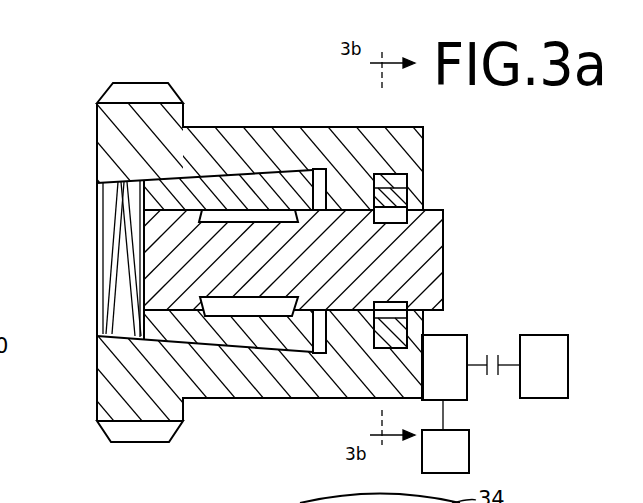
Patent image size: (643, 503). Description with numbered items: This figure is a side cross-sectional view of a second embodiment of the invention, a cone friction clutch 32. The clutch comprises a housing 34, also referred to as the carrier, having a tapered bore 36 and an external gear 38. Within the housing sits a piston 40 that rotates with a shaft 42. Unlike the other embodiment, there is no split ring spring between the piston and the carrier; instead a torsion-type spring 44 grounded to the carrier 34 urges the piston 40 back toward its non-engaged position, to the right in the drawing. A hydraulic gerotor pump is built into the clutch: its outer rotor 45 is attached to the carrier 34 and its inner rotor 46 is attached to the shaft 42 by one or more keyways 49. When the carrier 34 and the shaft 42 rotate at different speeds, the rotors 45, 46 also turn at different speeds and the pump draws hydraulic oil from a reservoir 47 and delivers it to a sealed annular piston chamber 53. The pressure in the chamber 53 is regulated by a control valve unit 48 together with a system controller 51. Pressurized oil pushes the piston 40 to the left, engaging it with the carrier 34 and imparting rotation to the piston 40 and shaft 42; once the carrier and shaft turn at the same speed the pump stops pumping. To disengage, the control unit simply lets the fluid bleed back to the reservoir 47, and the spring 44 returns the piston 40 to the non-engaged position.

The cone friction clutch 32 is at (482, 242).
The housing 34 is at (289, 142).
The tapered bore 36 is at (99, 289).
The external gear 38 is at (177, 95).
The piston 40 is at (187, 323).
The shaft 42 is at (167, 280).
The torsion-type spring 44 is at (120, 205).
The outer rotor 45 is at (399, 177).
The inner rotor 46 is at (387, 196).
The reservoir 47 is at (469, 447).
The control valve unit 48 is at (447, 372).
The keyways 49 is at (380, 218).
The system controller 51 is at (553, 335).
The sealed annular piston chamber 53 is at (320, 169).